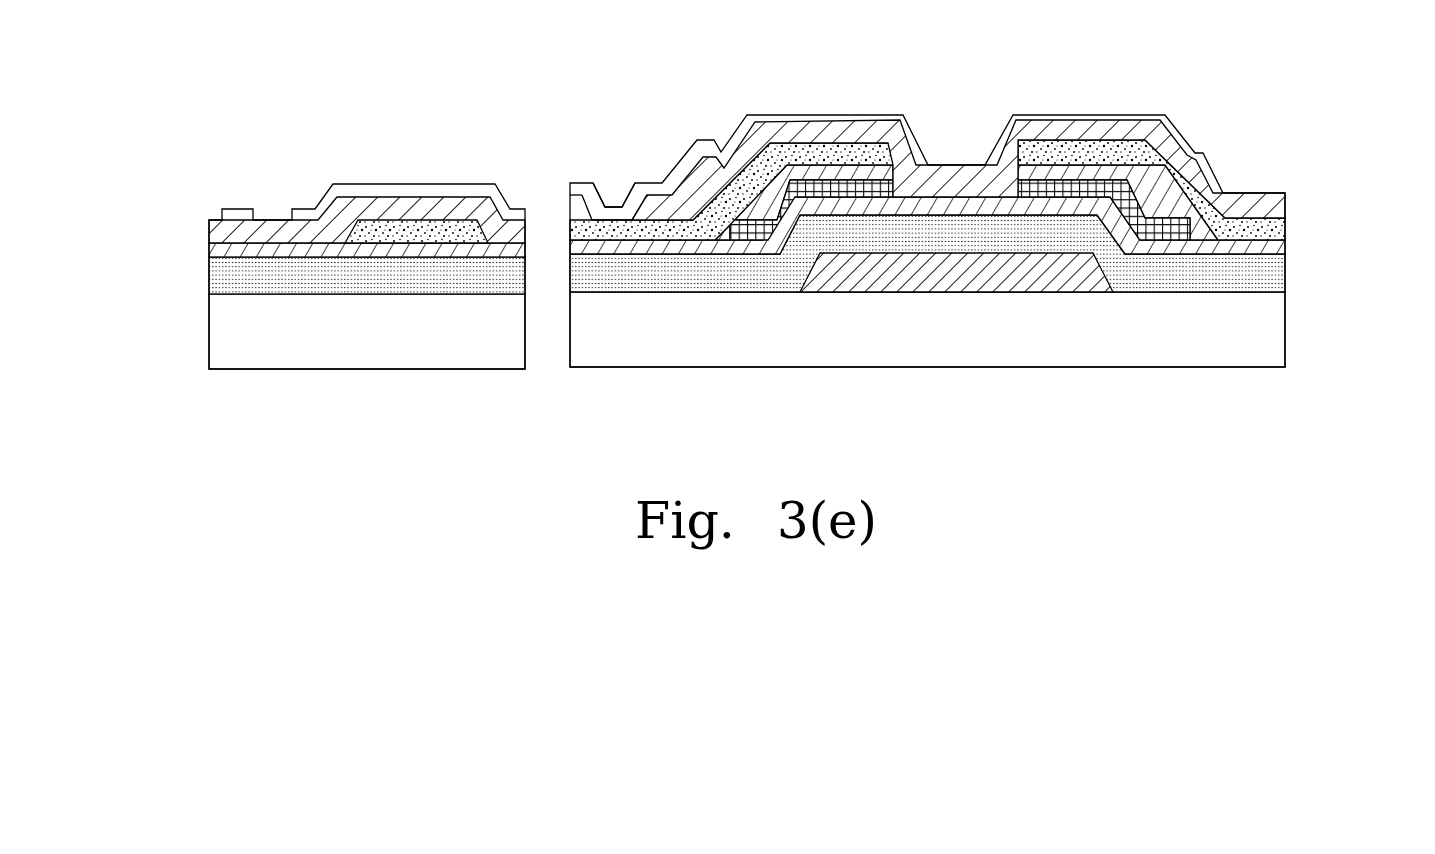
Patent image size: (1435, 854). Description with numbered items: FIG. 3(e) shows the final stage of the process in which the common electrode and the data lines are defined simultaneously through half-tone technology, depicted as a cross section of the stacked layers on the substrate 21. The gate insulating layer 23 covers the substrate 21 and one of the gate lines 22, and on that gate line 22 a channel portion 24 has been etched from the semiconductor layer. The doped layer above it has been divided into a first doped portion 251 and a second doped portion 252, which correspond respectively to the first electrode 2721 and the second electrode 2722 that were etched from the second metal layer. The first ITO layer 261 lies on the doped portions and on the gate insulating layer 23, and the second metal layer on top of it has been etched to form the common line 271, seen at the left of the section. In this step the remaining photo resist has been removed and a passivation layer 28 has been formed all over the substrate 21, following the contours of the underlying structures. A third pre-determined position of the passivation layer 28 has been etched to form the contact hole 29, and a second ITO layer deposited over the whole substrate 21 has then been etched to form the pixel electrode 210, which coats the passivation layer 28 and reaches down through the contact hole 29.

The substrate 21 is at (222, 336).
The gate line 22 is at (948, 278).
The gate insulating layer 23 is at (225, 281).
The channel portion 24 is at (1118, 240).
The first doped portion 251 is at (857, 185).
The second doped portion 252 is at (1080, 186).
The first ITO layer 261 is at (222, 249).
The common line 271 is at (375, 233).
The first electrode 2721 is at (827, 152).
The second electrode 2722 is at (1263, 228).
The passivation layer 28 is at (278, 230).
The contact hole 29 is at (608, 192).
The pixel electrode 210 is at (433, 190).